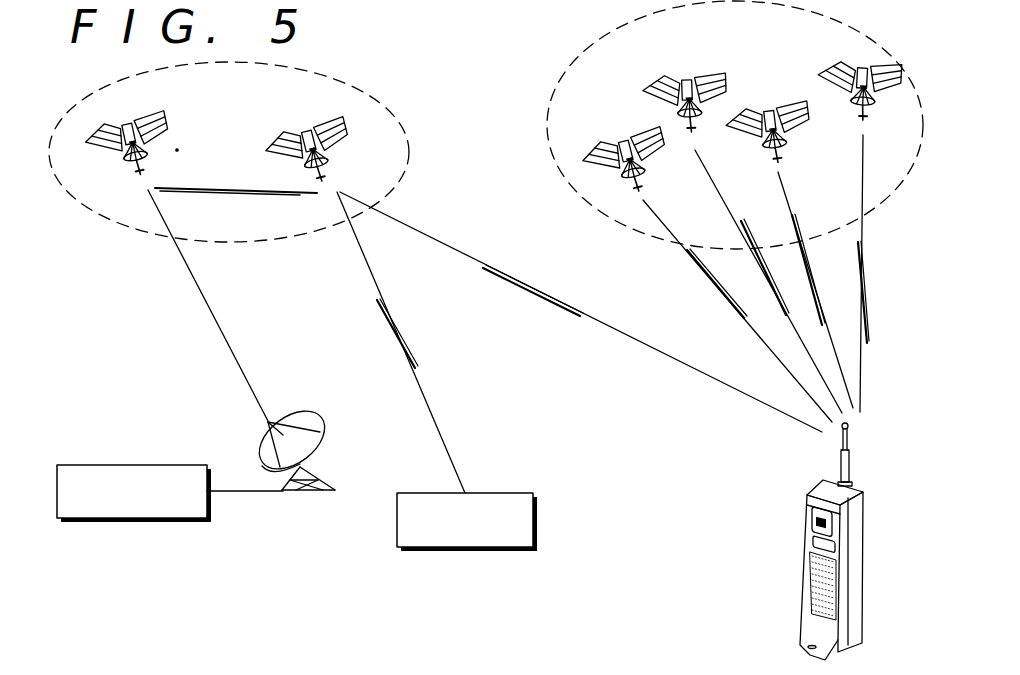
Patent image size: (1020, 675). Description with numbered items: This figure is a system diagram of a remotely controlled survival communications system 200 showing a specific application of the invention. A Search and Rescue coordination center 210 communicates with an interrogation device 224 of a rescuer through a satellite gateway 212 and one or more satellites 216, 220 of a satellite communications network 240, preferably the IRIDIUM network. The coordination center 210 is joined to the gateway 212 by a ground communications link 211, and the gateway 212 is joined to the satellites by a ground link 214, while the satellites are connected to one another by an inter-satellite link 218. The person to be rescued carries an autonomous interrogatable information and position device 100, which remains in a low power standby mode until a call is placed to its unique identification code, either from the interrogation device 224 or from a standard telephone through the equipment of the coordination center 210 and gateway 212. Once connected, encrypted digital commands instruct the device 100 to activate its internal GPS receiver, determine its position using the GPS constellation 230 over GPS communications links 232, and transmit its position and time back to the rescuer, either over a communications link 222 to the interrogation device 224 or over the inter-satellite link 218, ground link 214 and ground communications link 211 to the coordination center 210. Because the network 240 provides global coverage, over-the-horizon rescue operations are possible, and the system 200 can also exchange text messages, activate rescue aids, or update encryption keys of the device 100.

The autonomous interrogatable information and position device 100 is at (809, 566).
The remotely controlled survival communications system 200 is at (662, 607).
The Search and Rescue (SAR) coordination center 210 is at (132, 462).
The ground communications link 211 is at (238, 496).
The satellite gateway 212 is at (294, 412).
The ground link 214 is at (206, 312).
The satellite 216 is at (166, 117).
The inter-satellite link 218 is at (214, 186).
The satellite 220 is at (340, 140).
The communications link 222 is at (553, 308).
The interrogation device 224 is at (537, 517).
The GPS constellation 230 is at (586, 204).
The GPS communications links 232 is at (730, 202).
The satellite communications network 240 is at (130, 227).